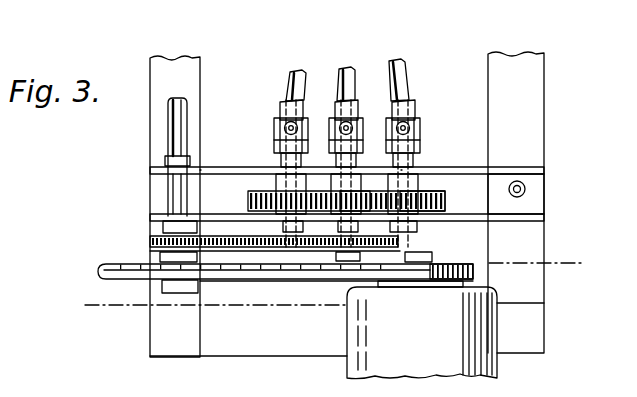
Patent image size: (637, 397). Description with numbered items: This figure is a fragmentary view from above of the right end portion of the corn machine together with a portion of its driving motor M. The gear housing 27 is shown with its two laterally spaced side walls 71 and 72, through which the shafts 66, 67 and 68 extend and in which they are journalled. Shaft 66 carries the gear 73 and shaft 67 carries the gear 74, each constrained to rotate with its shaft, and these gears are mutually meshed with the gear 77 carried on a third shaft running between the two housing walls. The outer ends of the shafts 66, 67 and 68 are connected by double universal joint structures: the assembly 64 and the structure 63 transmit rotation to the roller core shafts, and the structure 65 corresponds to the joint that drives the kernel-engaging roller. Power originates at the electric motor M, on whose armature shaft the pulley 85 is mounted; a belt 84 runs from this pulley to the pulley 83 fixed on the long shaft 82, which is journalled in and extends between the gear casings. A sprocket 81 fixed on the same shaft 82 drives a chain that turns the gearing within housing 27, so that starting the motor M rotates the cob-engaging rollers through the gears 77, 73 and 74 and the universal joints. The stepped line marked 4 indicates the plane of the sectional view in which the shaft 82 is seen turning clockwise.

The gear housing 27 is at (492, 163).
The double universal joint structure 63 is at (411, 71).
The double universal joint assembly 64 is at (288, 76).
The double universal joint structure 65 is at (351, 67).
The shaft 66 is at (433, 157).
The shaft 67 is at (276, 158).
The shaft 68 is at (367, 153).
The side wall 71 is at (446, 167).
The side wall 72 is at (531, 222).
The gear 73 is at (446, 195).
The gear 74 is at (249, 200).
The gear 77 is at (349, 197).
The sprocket 81 is at (151, 238).
The long shaft 82 is at (167, 133).
The pulley 83 is at (109, 265).
The belt 84 is at (325, 280).
The pulley 85 is at (446, 263).
The section line 4 is at (70, 292).
The electric motor M is at (422, 333).